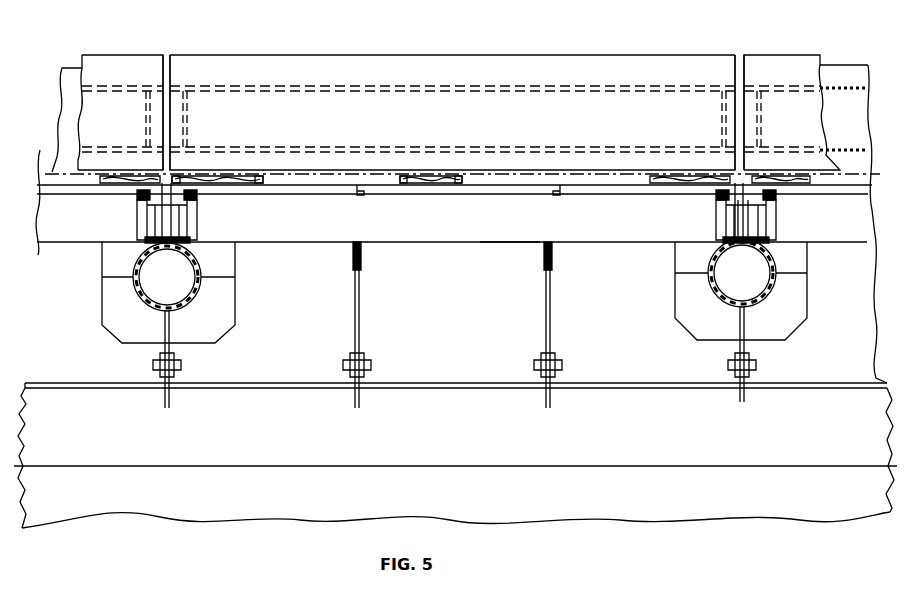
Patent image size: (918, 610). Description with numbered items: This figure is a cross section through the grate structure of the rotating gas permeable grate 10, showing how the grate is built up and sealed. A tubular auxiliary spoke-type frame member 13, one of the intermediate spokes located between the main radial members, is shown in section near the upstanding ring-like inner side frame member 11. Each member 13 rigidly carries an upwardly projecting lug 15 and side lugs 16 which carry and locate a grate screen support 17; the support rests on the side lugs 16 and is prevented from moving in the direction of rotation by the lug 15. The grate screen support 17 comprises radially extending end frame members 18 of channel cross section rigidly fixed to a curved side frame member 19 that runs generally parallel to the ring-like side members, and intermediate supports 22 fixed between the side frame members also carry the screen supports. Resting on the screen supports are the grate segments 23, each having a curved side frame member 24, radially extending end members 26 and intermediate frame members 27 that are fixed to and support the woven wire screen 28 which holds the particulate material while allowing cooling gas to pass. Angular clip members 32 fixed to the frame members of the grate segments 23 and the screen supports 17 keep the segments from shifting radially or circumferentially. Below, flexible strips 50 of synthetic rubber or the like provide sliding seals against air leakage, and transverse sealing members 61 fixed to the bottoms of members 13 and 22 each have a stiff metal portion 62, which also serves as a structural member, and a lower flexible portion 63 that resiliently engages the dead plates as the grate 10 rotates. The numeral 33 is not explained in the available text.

The gas permeable grate 10 is at (445, 105).
The duct top wall 33 is at (343, 69).
The inner side frame member 11 is at (288, 388).
The auxiliary spoke-type frame member 13 is at (204, 298).
The upwardly projecting lug 15 is at (189, 230).
The side lug 16 is at (132, 282).
The grate screen support 17 is at (441, 244).
The end frame member 18 is at (197, 206).
The curved side frame member 19 is at (512, 232).
The intermediate support 22 is at (361, 246).
The grate segment 23 is at (258, 183).
The curved side frame member 24 is at (503, 185).
The radially extending end member 26 is at (187, 183).
The intermediate frame member 27 is at (358, 192).
The woven wire screen 28 is at (412, 176).
The angular clip member 32 is at (716, 220).
The flexible sealing strip 50 is at (28, 390).
The transverse sealing member 61 is at (153, 359).
The stiff portion 62 is at (170, 328).
The lower flexible portion 63 is at (170, 402).